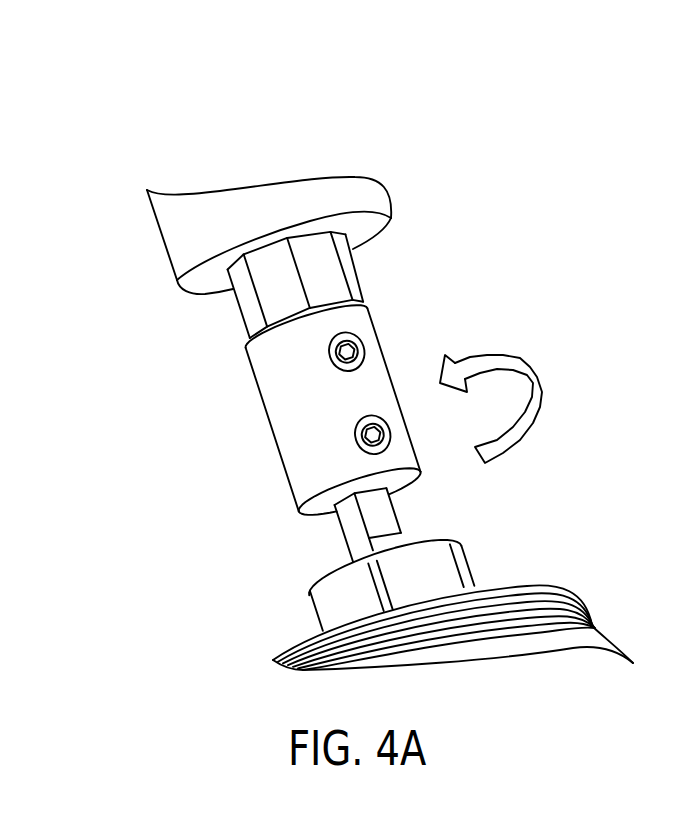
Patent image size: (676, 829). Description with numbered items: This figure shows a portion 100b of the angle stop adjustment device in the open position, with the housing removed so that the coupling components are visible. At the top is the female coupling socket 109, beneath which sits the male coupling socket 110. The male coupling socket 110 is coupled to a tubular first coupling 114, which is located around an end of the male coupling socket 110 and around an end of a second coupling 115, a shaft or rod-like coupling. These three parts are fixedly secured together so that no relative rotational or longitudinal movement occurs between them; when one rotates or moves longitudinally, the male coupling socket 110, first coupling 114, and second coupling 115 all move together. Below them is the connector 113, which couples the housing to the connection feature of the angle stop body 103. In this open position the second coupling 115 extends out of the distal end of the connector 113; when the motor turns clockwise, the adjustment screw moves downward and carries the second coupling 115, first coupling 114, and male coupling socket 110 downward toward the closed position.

The portion of angle stop adjustment device 100b is at (150, 125).
The female coupling socket 109 is at (177, 236).
The male coupling socket 110 is at (247, 305).
The first coupling 114 is at (283, 406).
The second coupling 115 is at (353, 535).
The connector 113 is at (445, 573).
The body 103 is at (573, 648).